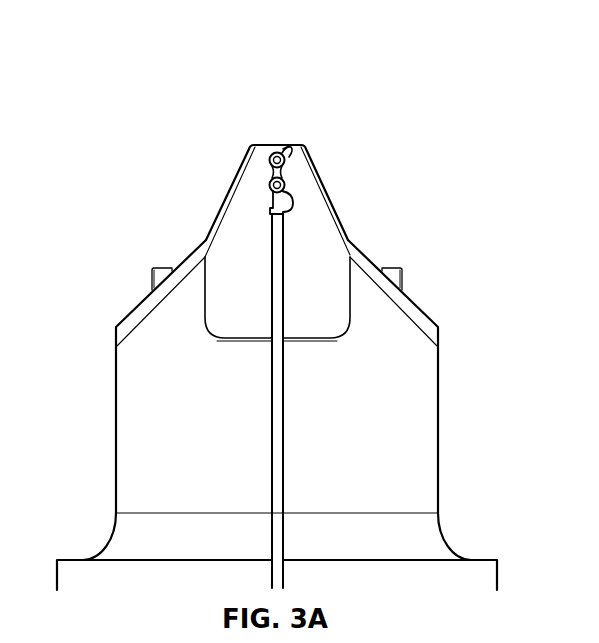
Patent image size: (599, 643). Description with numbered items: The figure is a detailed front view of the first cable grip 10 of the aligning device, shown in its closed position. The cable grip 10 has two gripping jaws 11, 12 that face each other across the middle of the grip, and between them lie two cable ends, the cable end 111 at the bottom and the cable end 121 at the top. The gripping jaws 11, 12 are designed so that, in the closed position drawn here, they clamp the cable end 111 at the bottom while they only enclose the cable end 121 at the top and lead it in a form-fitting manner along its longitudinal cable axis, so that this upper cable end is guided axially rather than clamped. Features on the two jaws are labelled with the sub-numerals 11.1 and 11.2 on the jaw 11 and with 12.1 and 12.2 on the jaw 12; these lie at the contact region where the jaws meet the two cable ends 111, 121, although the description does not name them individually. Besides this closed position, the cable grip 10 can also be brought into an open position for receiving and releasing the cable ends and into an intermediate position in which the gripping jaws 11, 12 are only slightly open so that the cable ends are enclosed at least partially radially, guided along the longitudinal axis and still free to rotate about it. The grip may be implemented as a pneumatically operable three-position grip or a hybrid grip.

The first cable grip 10 is at (119, 38).
The gripping jaw 11 is at (242, 205).
The first lower pivot portion 11.1 is at (267, 184).
The first upper pivot portion 11.2 is at (265, 160).
The gripping jaw 12 is at (310, 218).
The second lower pivot portion 12.1 is at (287, 187).
The second upper pivot portion 12.2 is at (286, 150).
The cable end 111 is at (284, 180).
The cable end 121 is at (276, 152).